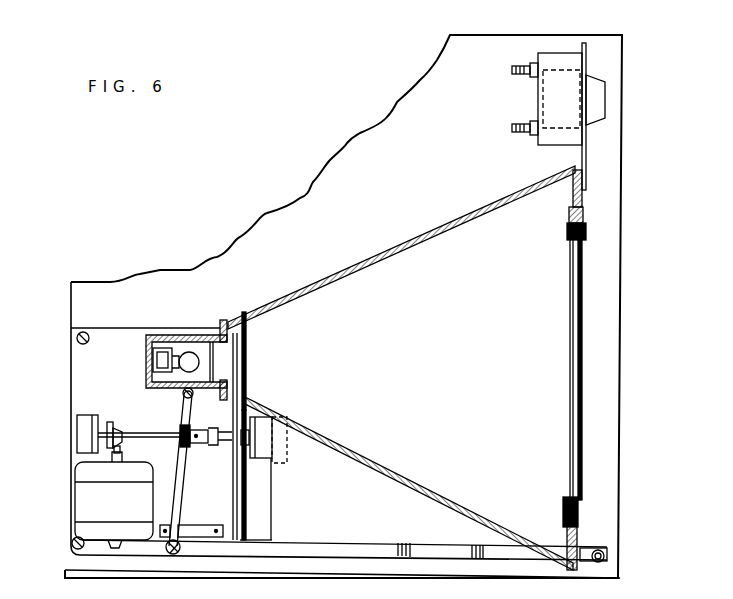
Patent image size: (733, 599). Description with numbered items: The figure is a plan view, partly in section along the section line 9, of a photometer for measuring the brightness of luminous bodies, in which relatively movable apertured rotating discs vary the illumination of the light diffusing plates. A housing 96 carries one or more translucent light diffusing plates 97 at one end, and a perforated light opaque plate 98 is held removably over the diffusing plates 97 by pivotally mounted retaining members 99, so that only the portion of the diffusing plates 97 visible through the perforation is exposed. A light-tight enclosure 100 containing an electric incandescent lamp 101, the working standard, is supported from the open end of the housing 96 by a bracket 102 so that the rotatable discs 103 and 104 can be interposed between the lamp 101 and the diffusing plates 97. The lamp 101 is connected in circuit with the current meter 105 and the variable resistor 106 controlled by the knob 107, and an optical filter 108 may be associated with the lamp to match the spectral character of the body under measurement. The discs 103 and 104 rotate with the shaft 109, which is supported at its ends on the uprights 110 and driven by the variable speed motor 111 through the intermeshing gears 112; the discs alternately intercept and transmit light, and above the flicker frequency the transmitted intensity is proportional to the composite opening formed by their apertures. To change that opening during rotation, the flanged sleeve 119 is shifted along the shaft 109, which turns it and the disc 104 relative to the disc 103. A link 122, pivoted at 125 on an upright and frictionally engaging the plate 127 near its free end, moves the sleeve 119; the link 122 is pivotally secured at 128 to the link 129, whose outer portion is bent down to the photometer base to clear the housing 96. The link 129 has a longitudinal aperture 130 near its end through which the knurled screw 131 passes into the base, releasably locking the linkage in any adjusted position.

The section line 9- 9 is at (246, 302).
The housing 96 is at (412, 240).
The light diffusing plates 97 is at (577, 391).
The light opaque plate 98 is at (580, 338).
The retaining members 99 is at (586, 229).
The light-tight enclosure 100 is at (168, 335).
The electric incandescent lamp 101 is at (190, 352).
The bracket 102 is at (252, 313).
The rotatable disc 103 is at (244, 480).
The rotatable disc 104 is at (233, 468).
The current meter 105 is at (555, 60).
The variable resistor 106 is at (557, 115).
The knob 107 is at (598, 100).
The optical filter 108 is at (210, 365).
The shaft 109 is at (140, 438).
The uprights 110 is at (80, 420).
The variable speed motor 111 is at (83, 498).
The intermeshing gears 112 is at (116, 440).
The flanged sleeve 119 is at (192, 444).
The link 122 is at (178, 488).
The pivot 125 is at (194, 397).
The plate 127 is at (193, 530).
The pivot 128 is at (176, 555).
The link 129 is at (352, 548).
The longitudinal aperture 130 is at (586, 550).
The knurled screw 131 is at (599, 563).